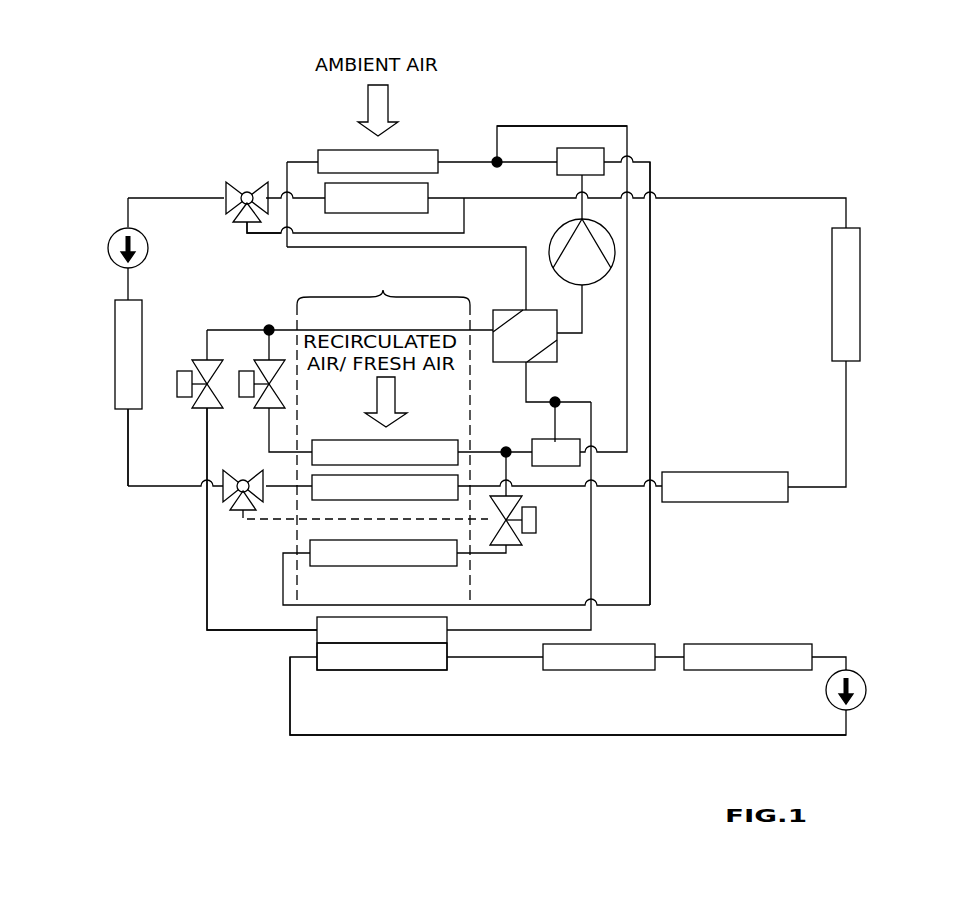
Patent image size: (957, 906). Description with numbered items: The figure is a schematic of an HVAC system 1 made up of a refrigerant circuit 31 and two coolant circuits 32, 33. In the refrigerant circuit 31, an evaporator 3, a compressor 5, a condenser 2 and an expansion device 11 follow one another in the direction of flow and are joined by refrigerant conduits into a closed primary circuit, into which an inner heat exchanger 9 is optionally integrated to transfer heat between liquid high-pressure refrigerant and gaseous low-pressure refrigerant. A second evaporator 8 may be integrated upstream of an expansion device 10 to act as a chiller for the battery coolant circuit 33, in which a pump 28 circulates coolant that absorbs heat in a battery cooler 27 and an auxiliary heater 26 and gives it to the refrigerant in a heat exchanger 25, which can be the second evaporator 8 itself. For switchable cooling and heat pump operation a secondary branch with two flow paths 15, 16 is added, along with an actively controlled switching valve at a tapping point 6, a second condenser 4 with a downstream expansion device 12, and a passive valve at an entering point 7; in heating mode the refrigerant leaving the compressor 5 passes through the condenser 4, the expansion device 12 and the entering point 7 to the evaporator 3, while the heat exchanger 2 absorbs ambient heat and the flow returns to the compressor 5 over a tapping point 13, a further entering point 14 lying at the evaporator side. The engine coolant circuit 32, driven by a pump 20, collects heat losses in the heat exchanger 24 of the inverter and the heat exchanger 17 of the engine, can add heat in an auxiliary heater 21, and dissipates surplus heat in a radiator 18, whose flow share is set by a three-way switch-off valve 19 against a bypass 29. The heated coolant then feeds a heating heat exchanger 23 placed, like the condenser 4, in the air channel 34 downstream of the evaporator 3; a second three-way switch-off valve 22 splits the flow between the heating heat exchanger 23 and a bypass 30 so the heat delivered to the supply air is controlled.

The HVAC system 1 is at (907, 103).
The condenser 2 is at (412, 150).
The evaporator 3 is at (432, 440).
The second condenser 4 is at (372, 567).
The compressor 5 is at (550, 238).
The tapping point 6 is at (578, 148).
The entering point 7 is at (542, 440).
The second evaporator 8 is at (317, 635).
The inner heat exchanger 9 is at (497, 310).
The expansion device 10 is at (200, 360).
The expansion device 11 is at (262, 360).
The expansion device 12 is at (515, 545).
The tapping point 13 is at (493, 160).
The entering point 14 is at (504, 448).
The first section of the secondary passage 15 is at (651, 172).
The second section of the secondary passage 16 is at (538, 126).
The engine radiator 17 is at (860, 288).
The radiator 18 is at (325, 194).
The switch-off valve 19 is at (242, 186).
The pump 20 is at (108, 248).
The auxiliary heater 21 is at (115, 352).
The switch-off valve 22 is at (223, 490).
The heating heat exchanger 23 is at (318, 503).
The inverter heat exchanger 24 is at (724, 472).
The heat exchanger 25 is at (384, 670).
The auxiliary heater 26 is at (599, 670).
The battery cooler 27 is at (749, 670).
The pump 28 is at (867, 688).
The bypass 29 is at (263, 236).
The bypass 30 is at (240, 521).
The refrigerant circuit 31 is at (207, 590).
The coolant circuit of the engine 32 is at (128, 452).
The coolant circuit of the battery 33 is at (290, 693).
The air channel 34 is at (383, 289).